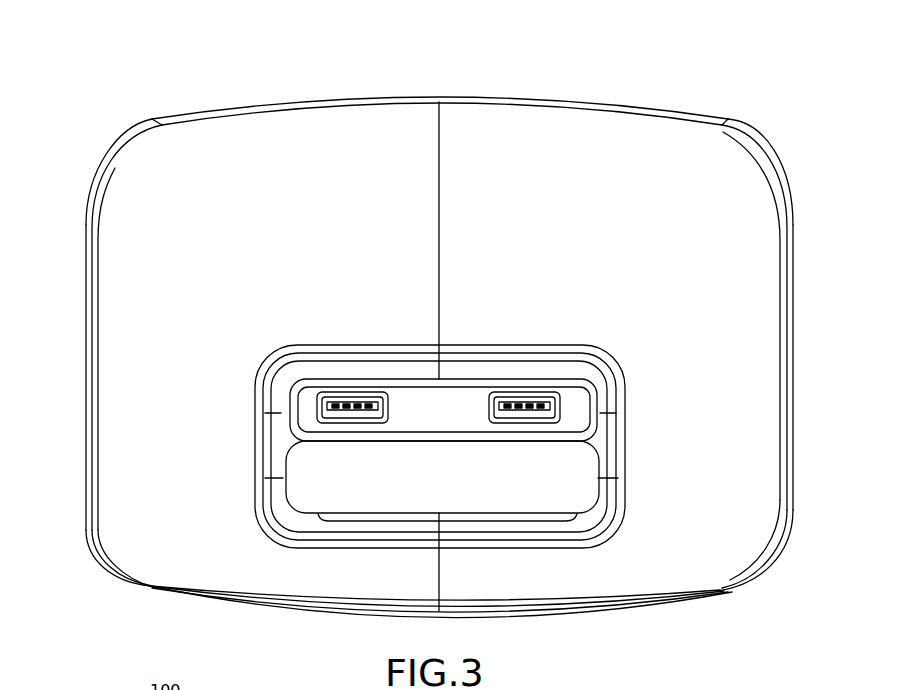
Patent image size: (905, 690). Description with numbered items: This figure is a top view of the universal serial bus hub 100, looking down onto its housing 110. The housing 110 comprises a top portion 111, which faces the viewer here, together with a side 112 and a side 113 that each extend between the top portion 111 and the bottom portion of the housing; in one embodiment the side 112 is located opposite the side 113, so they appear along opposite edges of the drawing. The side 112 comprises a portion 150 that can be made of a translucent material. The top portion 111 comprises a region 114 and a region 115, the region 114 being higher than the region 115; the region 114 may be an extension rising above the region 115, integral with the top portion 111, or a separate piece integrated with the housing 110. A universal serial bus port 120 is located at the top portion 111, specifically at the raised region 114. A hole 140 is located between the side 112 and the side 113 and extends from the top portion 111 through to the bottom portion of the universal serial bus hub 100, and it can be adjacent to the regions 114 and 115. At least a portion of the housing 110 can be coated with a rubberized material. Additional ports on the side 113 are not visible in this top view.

The universal serial bus hub 100 is at (719, 59).
The housing 110 is at (133, 520).
The top portion 111 is at (250, 167).
The side 112 is at (582, 622).
The side 113 is at (594, 97).
The region 114 is at (455, 421).
The region 115 is at (708, 522).
The universal serial bus port 120 is at (361, 423).
The hole 140 is at (324, 493).
The portion 150 is at (707, 599).